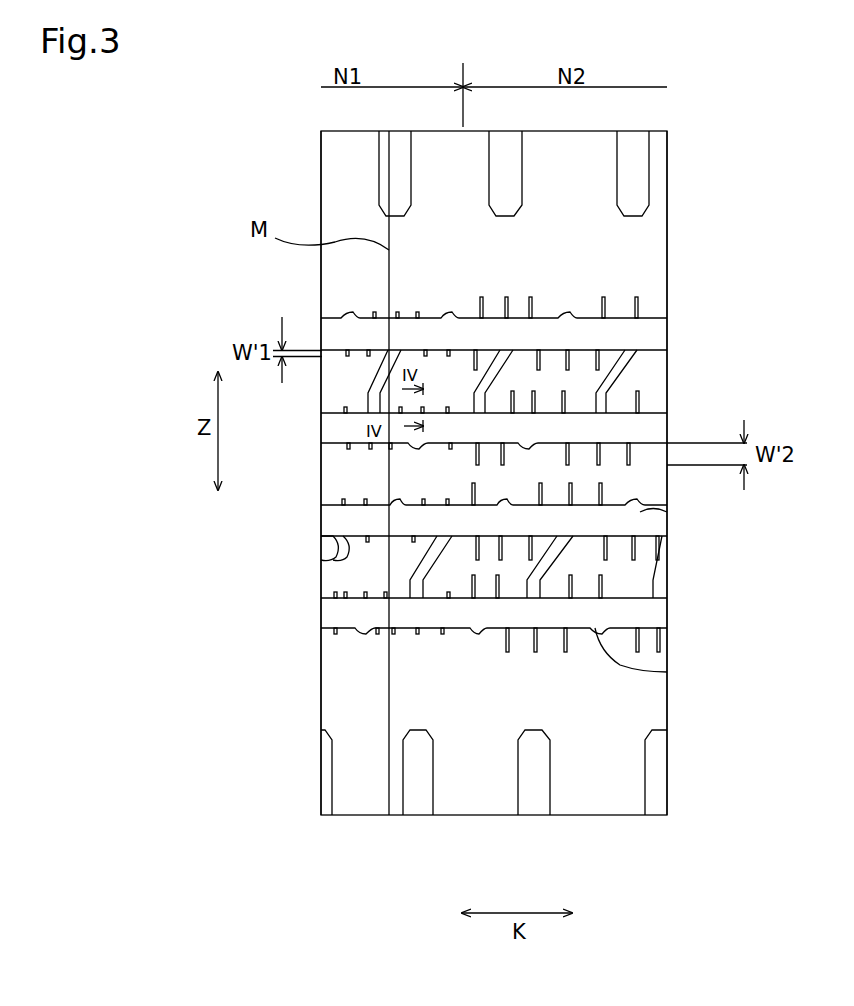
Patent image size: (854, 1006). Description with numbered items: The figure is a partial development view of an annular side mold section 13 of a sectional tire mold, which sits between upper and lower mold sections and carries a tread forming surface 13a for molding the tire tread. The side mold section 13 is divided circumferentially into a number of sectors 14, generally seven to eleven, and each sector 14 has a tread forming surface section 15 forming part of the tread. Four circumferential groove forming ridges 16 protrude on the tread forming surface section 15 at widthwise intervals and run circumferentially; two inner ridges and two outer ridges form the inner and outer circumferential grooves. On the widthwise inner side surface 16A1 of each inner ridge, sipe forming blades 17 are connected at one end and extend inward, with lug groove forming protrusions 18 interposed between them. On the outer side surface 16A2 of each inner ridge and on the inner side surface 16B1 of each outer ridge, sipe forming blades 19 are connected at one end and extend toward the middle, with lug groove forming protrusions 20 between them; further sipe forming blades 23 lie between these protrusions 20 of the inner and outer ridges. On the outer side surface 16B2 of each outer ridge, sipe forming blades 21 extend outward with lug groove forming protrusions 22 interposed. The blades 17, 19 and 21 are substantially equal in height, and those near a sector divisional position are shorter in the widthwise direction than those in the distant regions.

The side mold section 13 is at (667, 247).
The tread forming surface 13a is at (657, 267).
The sector 14 is at (321, 715).
The tread forming surface section 15 is at (333, 293).
The circumferential groove forming ridge 16 is at (653, 335).
The inner side surface of inner circumferential groove forming ridge 16A1 is at (335, 505).
The outer side surface of inner circumferential groove forming ridge 16A2 is at (337, 555).
The inner side surface of outer circumferential groove forming ridge 16B1 is at (335, 590).
The outer side surface of outer circumferential groove forming ridge 16B2 is at (378, 632).
The sipe forming blade 17 is at (600, 503).
The lug groove forming protrusion 18 is at (640, 512).
The sipe forming blade 19 is at (340, 410).
The lug groove forming protrusion 20 is at (637, 365).
The sipe forming blade 21 is at (327, 632).
The lug groove forming protrusion 22 is at (667, 672).
The sipe forming blade 23 is at (630, 380).